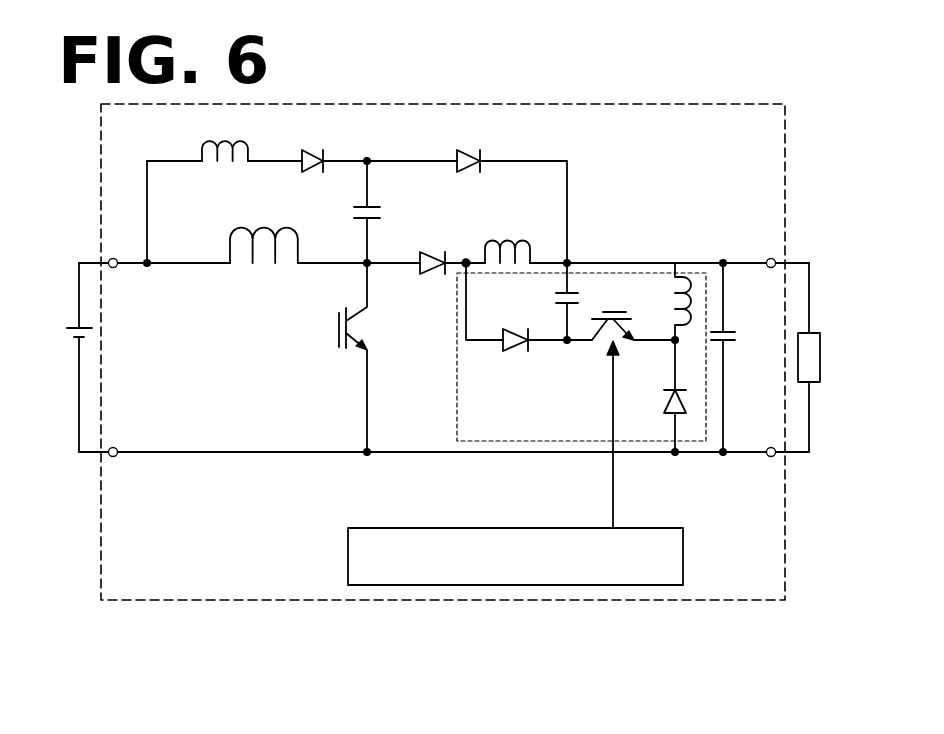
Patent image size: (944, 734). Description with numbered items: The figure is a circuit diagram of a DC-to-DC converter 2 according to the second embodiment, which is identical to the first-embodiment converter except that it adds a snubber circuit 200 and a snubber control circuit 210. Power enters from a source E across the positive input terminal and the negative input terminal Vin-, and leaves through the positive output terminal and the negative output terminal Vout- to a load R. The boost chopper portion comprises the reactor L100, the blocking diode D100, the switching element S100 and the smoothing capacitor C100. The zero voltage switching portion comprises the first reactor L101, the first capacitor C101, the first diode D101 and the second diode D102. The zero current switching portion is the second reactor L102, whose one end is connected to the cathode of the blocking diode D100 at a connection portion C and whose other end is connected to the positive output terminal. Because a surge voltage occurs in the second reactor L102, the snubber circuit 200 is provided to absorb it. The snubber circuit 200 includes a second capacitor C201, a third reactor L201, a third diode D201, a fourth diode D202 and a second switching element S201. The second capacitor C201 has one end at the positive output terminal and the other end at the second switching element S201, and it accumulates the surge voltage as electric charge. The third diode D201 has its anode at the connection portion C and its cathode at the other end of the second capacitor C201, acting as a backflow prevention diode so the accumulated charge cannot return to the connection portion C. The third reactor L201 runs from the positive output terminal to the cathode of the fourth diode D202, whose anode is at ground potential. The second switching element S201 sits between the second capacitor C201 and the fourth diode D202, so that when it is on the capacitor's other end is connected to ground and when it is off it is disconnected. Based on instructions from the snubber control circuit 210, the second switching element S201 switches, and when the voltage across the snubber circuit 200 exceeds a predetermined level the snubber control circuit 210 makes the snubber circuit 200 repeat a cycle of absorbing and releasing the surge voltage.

The DC-to-DC converter 2 is at (786, 190).
The snubber circuit 200 is at (598, 273).
The snubber control circuit 210 is at (570, 528).
The DC power supply E is at (69, 357).
The negative input terminal Vin- is at (116, 457).
The negative output terminal Vout- is at (769, 458).
The reactor L100 is at (264, 256).
The first reactor L101 is at (226, 165).
The second reactor L102 is at (508, 240).
The third reactor L201 is at (664, 301).
The blocking diode D100 is at (433, 249).
The first diode D101 is at (465, 172).
The second diode D102 is at (311, 172).
The third diode D201 is at (518, 356).
The fourth diode D202 is at (653, 396).
The connection portion C is at (466, 258).
The smoothing capacitor C100 is at (746, 357).
The first capacitor C101 is at (346, 212).
The second capacitor C201 is at (541, 301).
The switching element S100 is at (325, 357).
The second switching element S201 is at (633, 340).
The load resistor R is at (818, 357).